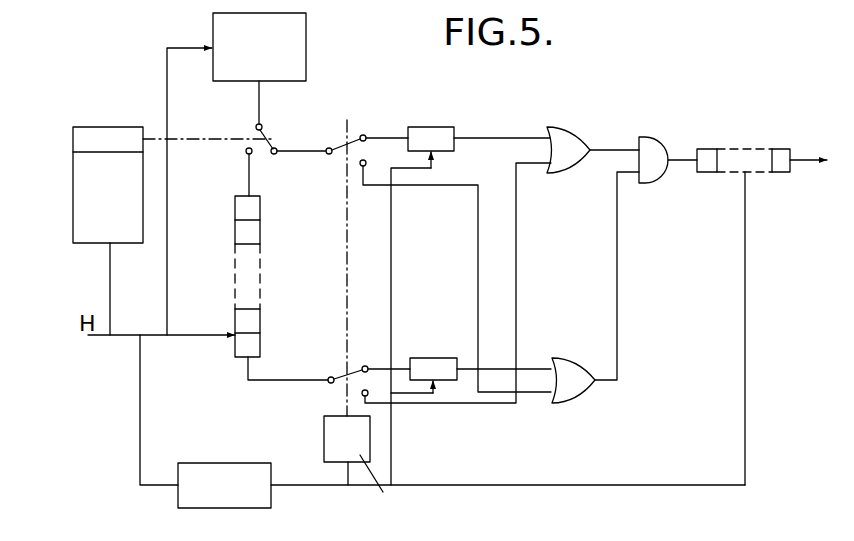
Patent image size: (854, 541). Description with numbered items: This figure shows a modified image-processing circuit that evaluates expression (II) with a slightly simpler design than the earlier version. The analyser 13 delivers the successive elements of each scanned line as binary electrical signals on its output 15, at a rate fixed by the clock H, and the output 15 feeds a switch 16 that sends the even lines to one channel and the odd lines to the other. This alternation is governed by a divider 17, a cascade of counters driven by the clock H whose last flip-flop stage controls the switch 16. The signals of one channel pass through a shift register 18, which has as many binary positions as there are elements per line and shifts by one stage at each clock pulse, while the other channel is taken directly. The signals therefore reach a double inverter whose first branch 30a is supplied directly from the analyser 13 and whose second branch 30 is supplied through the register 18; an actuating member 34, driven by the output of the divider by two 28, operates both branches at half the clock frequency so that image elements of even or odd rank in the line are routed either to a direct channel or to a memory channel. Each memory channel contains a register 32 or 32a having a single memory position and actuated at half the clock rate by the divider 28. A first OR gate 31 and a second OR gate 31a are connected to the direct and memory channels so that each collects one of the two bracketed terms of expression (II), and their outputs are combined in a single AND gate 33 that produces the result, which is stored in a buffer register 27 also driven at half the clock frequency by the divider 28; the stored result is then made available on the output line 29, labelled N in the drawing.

The analyser 13 is at (285, 60).
The output 15 is at (258, 103).
The switch 16 is at (268, 137).
The divider 17 is at (123, 228).
The shift register 18 is at (262, 236).
The buffer register 27 is at (705, 148).
The divider by two 28 is at (187, 498).
The output line N 29 is at (796, 168).
The second branch of the double inverter 30 is at (344, 378).
The first branch of the double inverter 30a is at (353, 141).
The first OR gate 31 is at (580, 385).
The second OR gate 31a is at (563, 137).
The register 32 is at (425, 363).
The register 32a is at (430, 134).
The AND gate 33 is at (646, 143).
The actuating member 34 is at (335, 437).